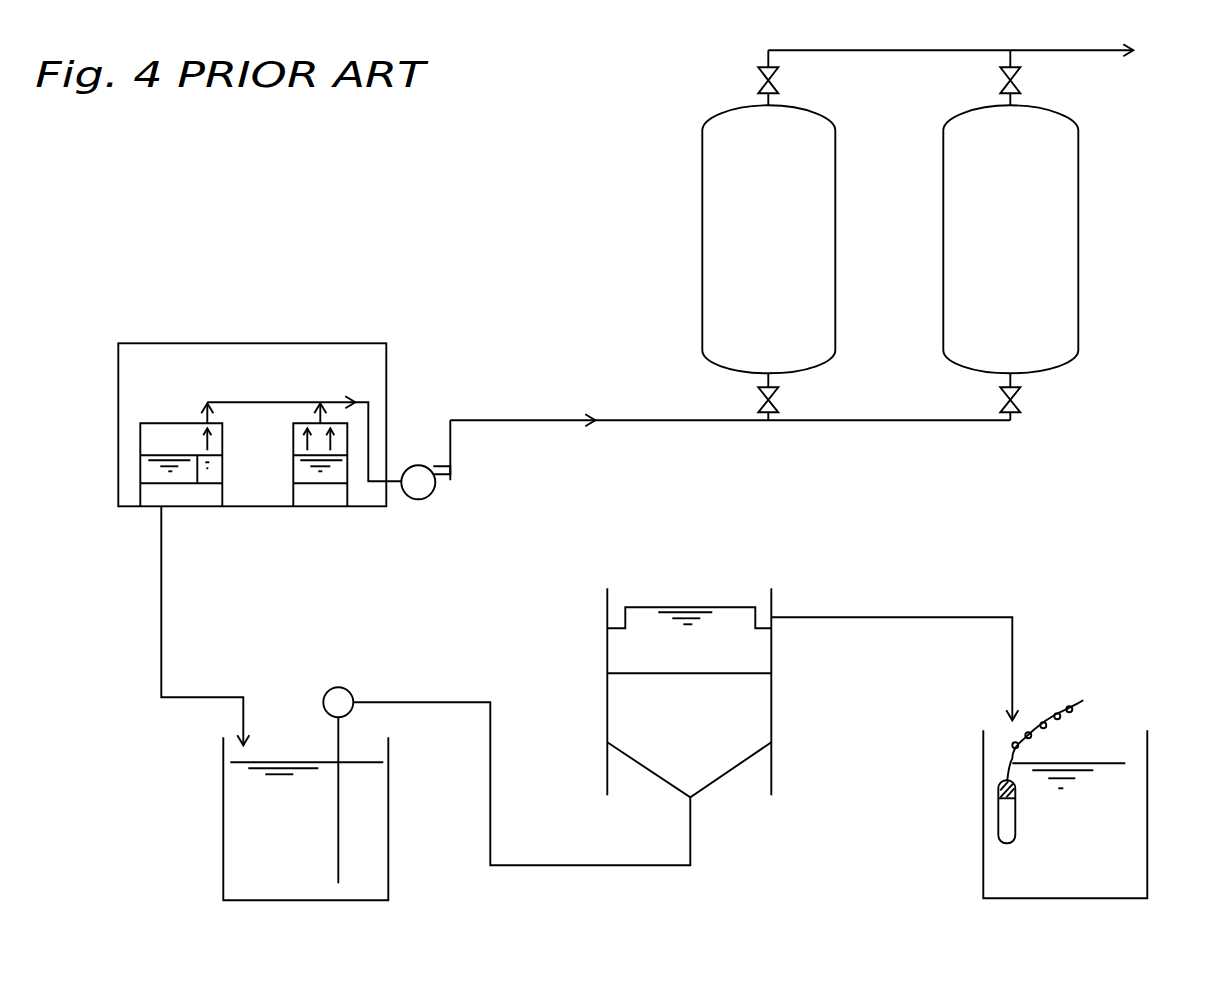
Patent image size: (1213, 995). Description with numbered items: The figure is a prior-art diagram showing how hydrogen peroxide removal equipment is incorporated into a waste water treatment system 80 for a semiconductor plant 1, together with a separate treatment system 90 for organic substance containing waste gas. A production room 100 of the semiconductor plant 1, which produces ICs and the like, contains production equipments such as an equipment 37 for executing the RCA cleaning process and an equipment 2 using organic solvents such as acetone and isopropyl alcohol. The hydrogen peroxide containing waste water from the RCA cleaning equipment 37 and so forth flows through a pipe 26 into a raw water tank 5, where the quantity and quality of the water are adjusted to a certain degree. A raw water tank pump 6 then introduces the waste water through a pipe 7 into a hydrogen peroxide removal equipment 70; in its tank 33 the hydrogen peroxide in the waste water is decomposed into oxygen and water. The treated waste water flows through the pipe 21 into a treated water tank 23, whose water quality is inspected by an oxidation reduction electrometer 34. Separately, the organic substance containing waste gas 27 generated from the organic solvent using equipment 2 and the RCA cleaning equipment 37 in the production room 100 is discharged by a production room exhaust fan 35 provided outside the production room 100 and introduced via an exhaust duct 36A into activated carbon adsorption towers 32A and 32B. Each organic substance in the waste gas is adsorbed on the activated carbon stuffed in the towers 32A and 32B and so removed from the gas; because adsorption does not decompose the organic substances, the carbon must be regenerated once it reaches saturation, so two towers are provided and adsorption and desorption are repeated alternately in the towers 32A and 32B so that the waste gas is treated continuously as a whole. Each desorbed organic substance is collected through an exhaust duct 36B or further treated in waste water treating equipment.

The semiconductor plant 1 is at (337, 323).
The production room 100 is at (155, 358).
The RCA cleaning equipment 37 is at (155, 423).
The organic solvent using equipment 2 is at (293, 440).
The organic substance containing waste gas 27 is at (215, 443).
The production room exhaust fan 35 is at (420, 500).
The exhaust duct 36A is at (525, 420).
The exhaust duct 36B is at (943, 50).
The treatment system for organic substance containing waste gas 90 is at (608, 150).
The activated carbon adsorption tower 32A is at (702, 198).
The activated carbon adsorption tower 32B is at (943, 187).
The waste water treatment system 80 is at (107, 702).
The pipe 26 is at (193, 697).
The raw water tank 5 is at (223, 787).
The raw water tank pump 6 is at (340, 687).
The pipe 7 is at (445, 697).
The hydrogen peroxide removal equipment 70 is at (773, 705).
The tank 33 is at (658, 607).
The pipe 21 is at (937, 617).
The treated water tank 23 is at (1147, 822).
The oxidation reduction electrometer 34 is at (1015, 825).